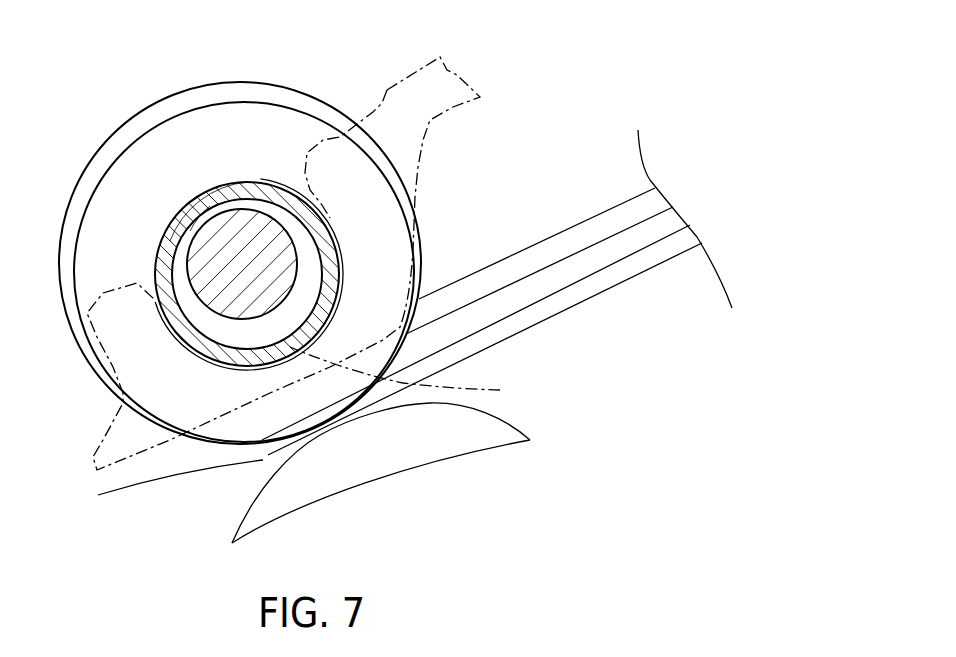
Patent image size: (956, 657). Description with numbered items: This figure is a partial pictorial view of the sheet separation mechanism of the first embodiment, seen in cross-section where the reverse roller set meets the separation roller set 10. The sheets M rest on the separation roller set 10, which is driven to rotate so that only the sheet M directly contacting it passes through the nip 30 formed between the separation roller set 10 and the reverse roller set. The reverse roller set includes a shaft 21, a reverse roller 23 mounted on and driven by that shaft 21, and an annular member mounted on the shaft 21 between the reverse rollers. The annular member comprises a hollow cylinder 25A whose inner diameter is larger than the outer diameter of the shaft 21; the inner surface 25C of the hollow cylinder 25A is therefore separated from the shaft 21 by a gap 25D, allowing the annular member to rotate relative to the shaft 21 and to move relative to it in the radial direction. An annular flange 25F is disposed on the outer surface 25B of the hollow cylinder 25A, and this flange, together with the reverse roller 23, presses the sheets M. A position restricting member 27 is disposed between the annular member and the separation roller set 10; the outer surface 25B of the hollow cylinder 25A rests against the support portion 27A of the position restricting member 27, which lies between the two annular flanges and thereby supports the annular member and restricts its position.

The separation roller set 10 is at (247, 507).
The shaft 21 is at (251, 213).
The reverse roller 23 is at (125, 122).
The hollow cylinder 25A is at (222, 195).
The outer surface 25B is at (248, 190).
The inner surface 25C is at (187, 220).
The gap 25D is at (195, 198).
The annular flange 25F is at (100, 180).
The position restricting member 27 is at (383, 88).
The support portion 27A is at (500, 390).
The nip 30 is at (163, 486).
The sheets M is at (603, 212).